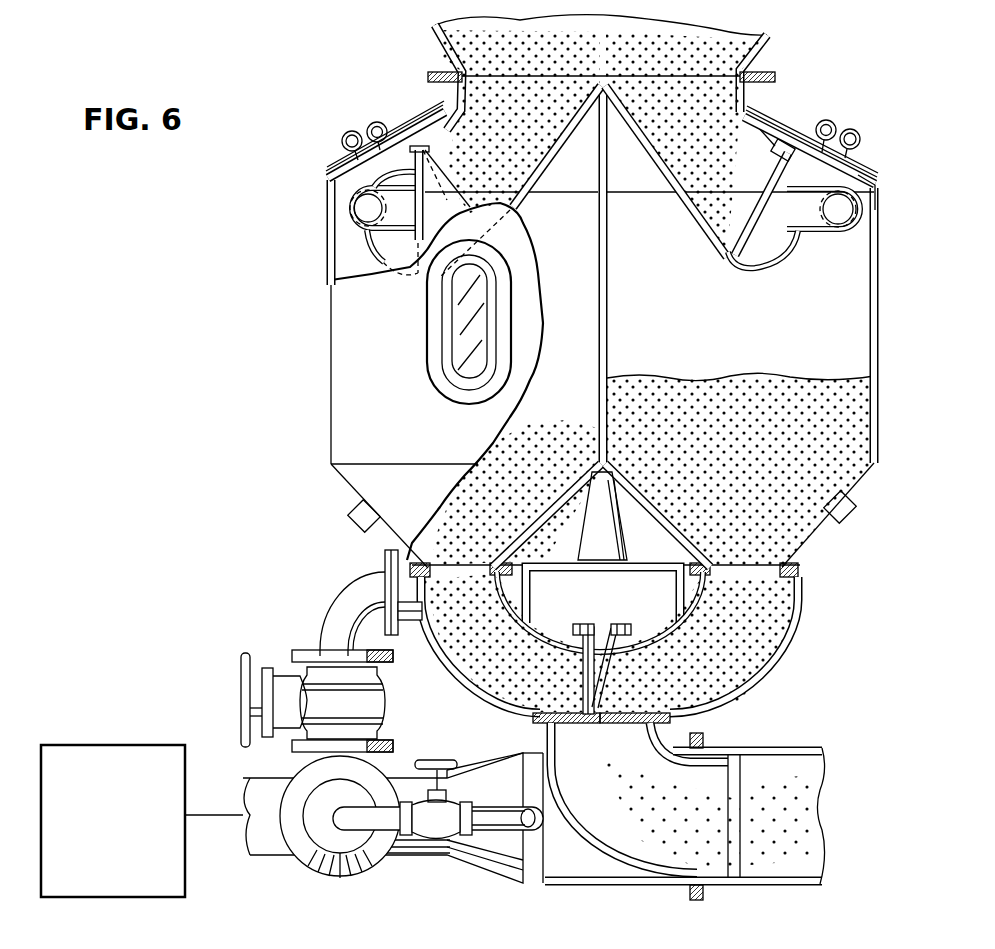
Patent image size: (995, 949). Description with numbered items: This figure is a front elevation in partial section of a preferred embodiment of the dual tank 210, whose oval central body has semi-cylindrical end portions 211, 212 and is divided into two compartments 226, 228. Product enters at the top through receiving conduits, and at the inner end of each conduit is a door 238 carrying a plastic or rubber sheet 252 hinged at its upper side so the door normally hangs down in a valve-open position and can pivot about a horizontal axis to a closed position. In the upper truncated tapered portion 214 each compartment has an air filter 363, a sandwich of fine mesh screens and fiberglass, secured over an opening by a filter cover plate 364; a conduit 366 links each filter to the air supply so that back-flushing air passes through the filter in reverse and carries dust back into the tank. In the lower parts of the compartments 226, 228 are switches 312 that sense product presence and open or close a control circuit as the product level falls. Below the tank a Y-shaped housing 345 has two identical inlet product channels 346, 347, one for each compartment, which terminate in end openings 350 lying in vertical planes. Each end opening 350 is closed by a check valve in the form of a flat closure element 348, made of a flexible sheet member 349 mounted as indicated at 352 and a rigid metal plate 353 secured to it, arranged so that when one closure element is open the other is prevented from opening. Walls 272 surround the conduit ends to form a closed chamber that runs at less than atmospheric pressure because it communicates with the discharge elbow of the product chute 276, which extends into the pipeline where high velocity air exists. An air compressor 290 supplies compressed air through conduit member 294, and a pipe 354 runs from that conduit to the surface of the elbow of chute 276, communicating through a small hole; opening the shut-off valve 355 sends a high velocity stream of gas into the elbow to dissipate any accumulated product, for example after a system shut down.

The dual tank 210 is at (295, 352).
The semi-cylindrical end portion 211 is at (333, 397).
The semi-cylindrical end portion 212 is at (876, 374).
The truncated tapered portion 214 is at (876, 188).
The compartment 226 is at (735, 352).
The compartment 228 is at (577, 404).
The door 238 is at (333, 251).
The sheet 252 is at (752, 207).
The walls 272 is at (573, 556).
The product chute 276 is at (700, 842).
The air compressor 290 is at (140, 746).
The conduit member 294 is at (410, 853).
The switch 312 is at (362, 522).
The Y-shaped housing 345 is at (790, 642).
The inlet product channel 346 is at (746, 670).
The inlet product channel 347 is at (488, 667).
The flat closure element 348 is at (595, 718).
The flexible sheet member 349 is at (580, 668).
The end opening 350 is at (527, 703).
The mounting 352 is at (582, 625).
The rigid metal plate 353 is at (605, 650).
The pipe 354 is at (517, 818).
The shut-off valve 355 is at (428, 800).
The air filter 363 is at (333, 171).
The filter cover plate 364 is at (414, 118).
The conduit 366 is at (392, 112).